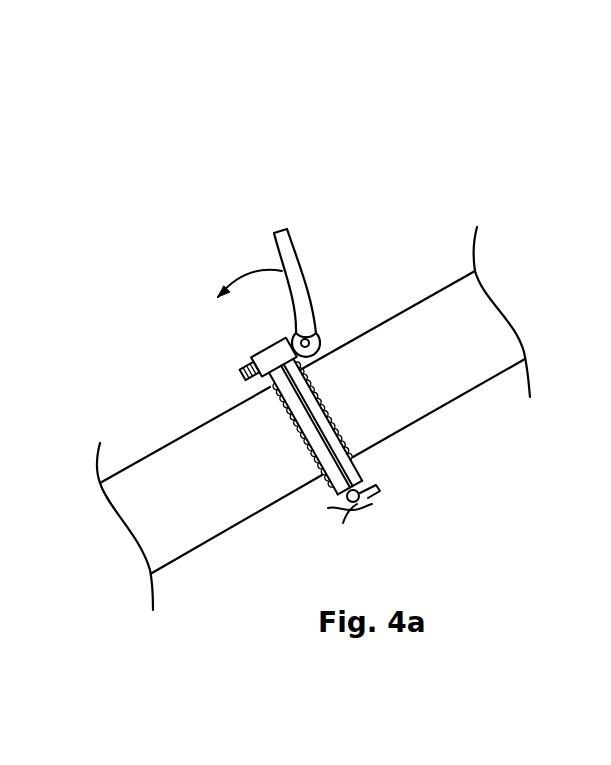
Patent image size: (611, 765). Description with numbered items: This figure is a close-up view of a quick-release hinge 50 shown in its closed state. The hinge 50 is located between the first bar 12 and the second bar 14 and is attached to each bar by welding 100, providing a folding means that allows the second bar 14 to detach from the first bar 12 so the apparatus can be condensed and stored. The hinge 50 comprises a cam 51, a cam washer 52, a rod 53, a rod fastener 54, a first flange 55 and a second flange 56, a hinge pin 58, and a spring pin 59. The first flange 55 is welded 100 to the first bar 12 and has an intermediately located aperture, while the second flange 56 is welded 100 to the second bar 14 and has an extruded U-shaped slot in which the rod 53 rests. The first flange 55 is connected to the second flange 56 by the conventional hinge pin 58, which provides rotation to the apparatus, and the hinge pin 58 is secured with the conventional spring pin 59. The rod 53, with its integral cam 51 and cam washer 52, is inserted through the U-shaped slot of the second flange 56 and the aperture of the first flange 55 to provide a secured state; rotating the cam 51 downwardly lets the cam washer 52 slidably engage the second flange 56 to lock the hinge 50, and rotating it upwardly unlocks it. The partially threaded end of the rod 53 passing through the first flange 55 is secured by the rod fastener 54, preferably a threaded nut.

The first bar 12 is at (198, 472).
The second bar 14 is at (410, 327).
The quick-release hinge 50 is at (440, 212).
The cam 51 is at (295, 253).
The cam washer 52 is at (292, 341).
The rod 53 is at (280, 357).
The rod fastener 54 is at (247, 362).
The first flange 55 is at (290, 398).
The second flange 56 is at (311, 392).
The hinge pin 58 is at (368, 505).
The spring pin 59 is at (378, 484).
The welding 100 is at (341, 432).